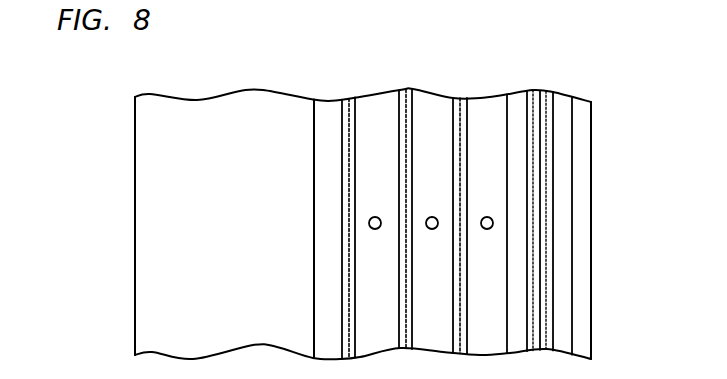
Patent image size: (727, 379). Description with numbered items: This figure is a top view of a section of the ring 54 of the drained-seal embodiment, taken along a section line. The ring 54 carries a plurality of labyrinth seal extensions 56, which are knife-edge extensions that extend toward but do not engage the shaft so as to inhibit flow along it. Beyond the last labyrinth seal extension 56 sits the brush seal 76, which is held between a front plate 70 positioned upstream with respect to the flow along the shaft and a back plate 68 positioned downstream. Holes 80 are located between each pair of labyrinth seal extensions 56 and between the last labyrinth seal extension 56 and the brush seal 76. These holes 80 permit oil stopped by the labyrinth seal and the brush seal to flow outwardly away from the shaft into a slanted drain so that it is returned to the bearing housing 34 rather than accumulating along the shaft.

The bearing housing 34 is at (137, 157).
The ring 54 is at (312, 115).
The labyrinth seal extensions 56 is at (359, 107).
The back plate 68 is at (592, 127).
The front plate 70 is at (515, 102).
The brush seal 76 is at (537, 93).
The holes 80 is at (380, 228).